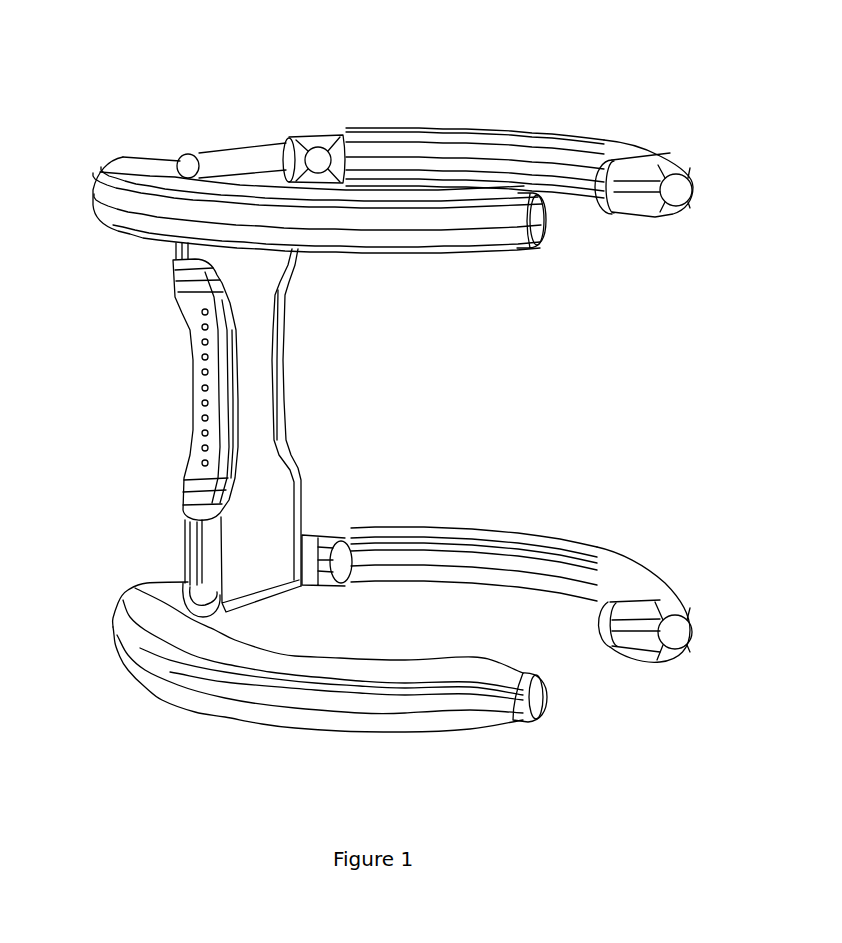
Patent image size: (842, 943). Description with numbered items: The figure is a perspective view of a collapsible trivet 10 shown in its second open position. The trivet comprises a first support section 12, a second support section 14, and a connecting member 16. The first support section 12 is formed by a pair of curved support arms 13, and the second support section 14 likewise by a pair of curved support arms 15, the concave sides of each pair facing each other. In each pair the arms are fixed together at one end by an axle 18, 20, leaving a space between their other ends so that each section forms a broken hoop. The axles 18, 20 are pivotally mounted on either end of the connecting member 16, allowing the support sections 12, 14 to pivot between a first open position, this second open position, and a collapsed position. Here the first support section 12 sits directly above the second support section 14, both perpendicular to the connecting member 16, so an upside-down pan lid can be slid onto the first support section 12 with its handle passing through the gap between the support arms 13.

The collapsible trivet 10 is at (730, 81).
The first support section 12 is at (468, 150).
The support arms 13 is at (680, 186).
The second support section 14 is at (410, 716).
The support arms 15 is at (660, 598).
The connecting member 16 is at (250, 400).
The axle 18 is at (300, 133).
The axle 20 is at (305, 537).